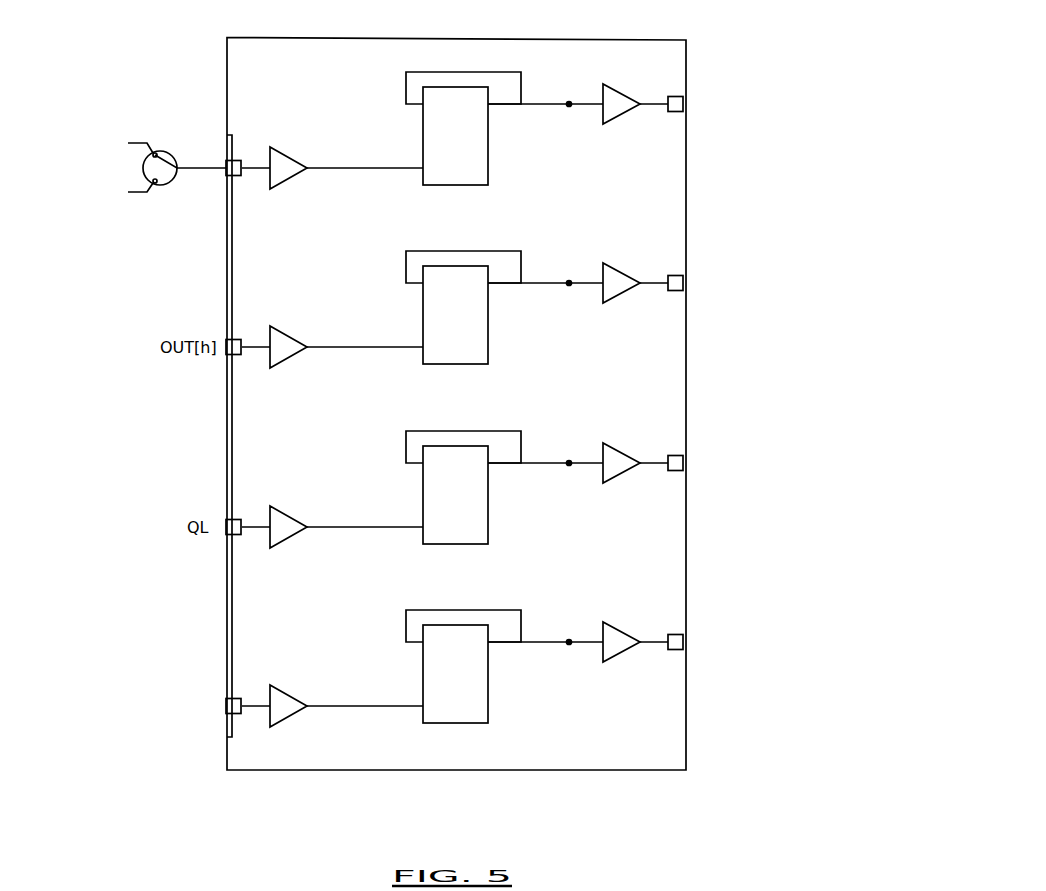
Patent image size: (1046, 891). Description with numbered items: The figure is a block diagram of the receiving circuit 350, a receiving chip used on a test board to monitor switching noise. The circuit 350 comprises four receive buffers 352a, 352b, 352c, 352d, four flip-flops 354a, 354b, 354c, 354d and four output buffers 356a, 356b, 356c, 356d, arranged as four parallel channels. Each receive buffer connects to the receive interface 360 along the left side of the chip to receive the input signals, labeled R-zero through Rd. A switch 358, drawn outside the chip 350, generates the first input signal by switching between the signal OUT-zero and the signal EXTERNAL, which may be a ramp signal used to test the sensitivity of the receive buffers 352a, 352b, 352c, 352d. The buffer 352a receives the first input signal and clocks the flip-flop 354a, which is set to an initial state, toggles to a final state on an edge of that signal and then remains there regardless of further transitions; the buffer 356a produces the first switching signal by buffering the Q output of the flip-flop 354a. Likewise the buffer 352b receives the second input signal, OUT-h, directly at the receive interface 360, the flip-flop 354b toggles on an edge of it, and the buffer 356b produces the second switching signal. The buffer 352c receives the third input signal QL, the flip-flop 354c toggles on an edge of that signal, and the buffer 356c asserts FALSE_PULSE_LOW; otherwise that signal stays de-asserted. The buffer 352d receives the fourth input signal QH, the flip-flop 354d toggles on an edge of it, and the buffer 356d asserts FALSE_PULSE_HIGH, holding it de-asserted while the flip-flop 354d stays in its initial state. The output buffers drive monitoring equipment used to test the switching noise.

The receiving circuit 350 is at (612, 40).
The receive buffer 352a is at (279, 150).
The receive buffer 352b is at (279, 329).
The receive buffer 352c is at (279, 509).
The receive buffer 352d is at (279, 688).
The flip-flop 354a is at (470, 185).
The flip-flop 354b is at (470, 364).
The flip-flop 354c is at (470, 544).
The flip-flop 354d is at (470, 723).
The buffer 356a is at (610, 87).
The buffer 356b is at (610, 266).
The buffer 356c is at (610, 446).
The buffer 356d is at (610, 625).
The switch 358 is at (165, 152).
The receive interface 360 is at (222, 717).